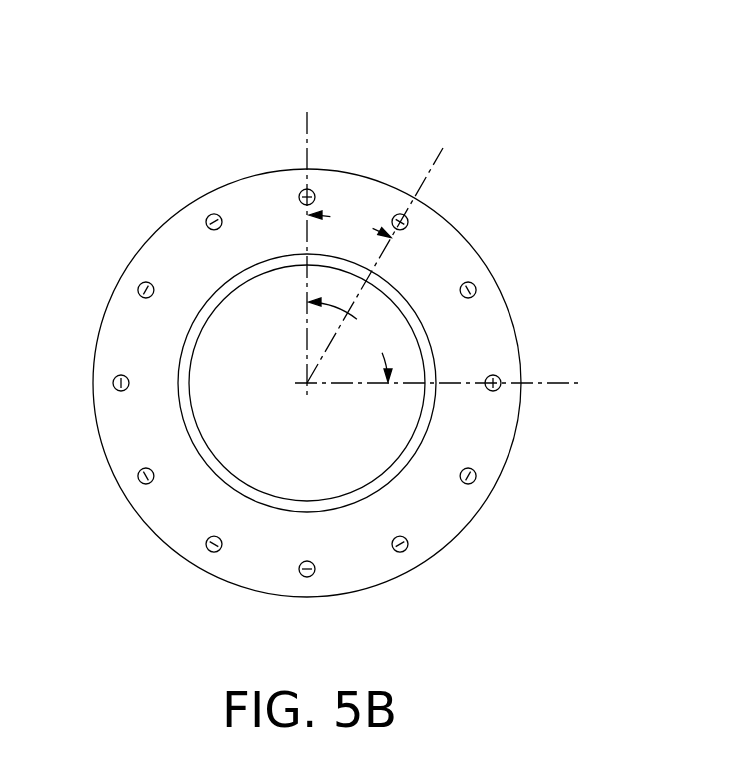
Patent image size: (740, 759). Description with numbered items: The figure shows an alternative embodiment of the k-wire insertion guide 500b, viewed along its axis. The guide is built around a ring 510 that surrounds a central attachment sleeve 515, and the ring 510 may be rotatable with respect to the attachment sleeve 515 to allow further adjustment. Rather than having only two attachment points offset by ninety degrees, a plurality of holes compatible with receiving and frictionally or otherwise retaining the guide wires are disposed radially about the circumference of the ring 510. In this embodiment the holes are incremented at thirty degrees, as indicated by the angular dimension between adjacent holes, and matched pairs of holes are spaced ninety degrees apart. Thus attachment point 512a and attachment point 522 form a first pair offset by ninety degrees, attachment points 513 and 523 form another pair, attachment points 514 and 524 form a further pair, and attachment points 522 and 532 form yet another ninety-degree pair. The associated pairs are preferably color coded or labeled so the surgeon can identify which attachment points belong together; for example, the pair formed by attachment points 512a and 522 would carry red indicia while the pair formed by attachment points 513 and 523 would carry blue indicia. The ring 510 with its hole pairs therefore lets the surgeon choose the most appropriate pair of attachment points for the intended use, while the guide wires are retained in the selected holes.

The guide 500b is at (120, 233).
The ring 510 is at (103, 455).
The attachment point 512a is at (315, 195).
The attachment point 513 is at (408, 221).
The attachment point 514 is at (474, 284).
The attachment sleeve 515 is at (232, 470).
The attachment point 522 is at (499, 377).
The attachment point 523 is at (476, 480).
The attachment point 524 is at (408, 548).
The attachment point 532 is at (315, 573).